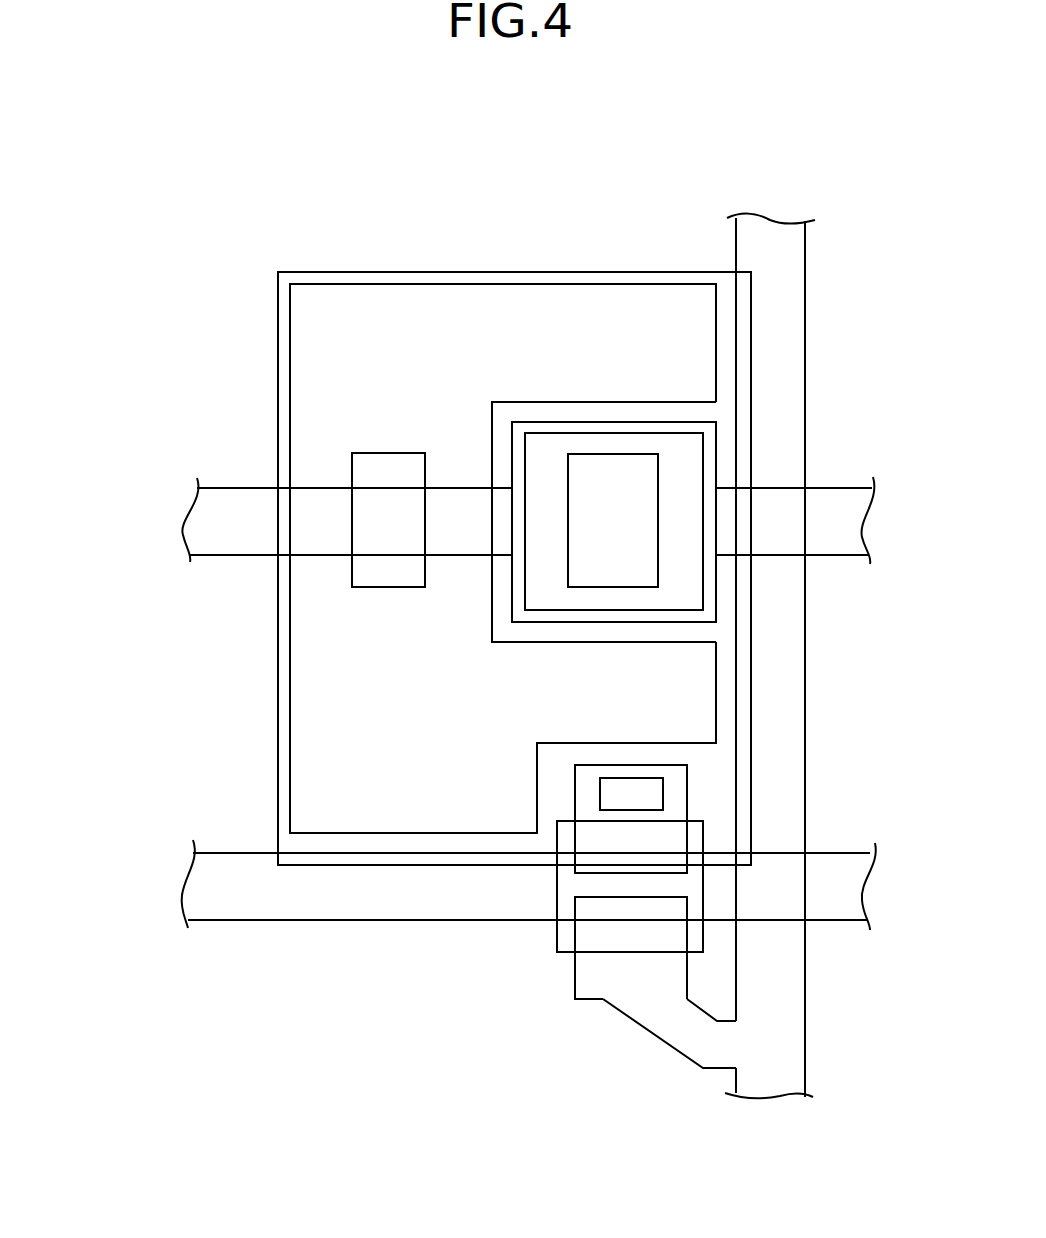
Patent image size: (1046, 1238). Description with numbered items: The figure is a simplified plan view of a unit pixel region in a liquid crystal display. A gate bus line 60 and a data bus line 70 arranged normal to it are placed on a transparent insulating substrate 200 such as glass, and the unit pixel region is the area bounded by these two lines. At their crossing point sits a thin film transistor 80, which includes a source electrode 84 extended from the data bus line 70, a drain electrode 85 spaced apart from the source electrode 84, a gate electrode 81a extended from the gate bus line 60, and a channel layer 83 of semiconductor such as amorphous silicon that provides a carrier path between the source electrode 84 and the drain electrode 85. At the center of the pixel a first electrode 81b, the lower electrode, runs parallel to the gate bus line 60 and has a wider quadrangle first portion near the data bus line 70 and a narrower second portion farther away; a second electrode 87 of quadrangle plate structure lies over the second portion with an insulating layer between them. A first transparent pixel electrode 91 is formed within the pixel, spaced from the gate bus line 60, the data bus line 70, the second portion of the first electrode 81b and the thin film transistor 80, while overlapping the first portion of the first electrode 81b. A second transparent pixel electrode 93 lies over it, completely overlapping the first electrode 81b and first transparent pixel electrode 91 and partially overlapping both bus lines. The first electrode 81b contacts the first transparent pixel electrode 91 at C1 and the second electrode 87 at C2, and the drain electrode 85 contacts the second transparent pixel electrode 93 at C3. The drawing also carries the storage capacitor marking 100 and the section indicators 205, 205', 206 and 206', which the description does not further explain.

The transparent insulating substrate 200 is at (552, 236).
The gate bus line 60 is at (358, 910).
The data bus line 70 is at (788, 787).
The thin film transistor 80 is at (548, 967).
The gate electrode 81a is at (620, 885).
The first electrode 81b is at (555, 615).
The channel layer 83 is at (697, 940).
The source electrode 84 is at (598, 943).
The drain electrode 85 is at (680, 797).
The second electrode 87 is at (690, 455).
The first transparent pixel electrode 91 is at (302, 670).
The second transparent pixel electrode 93 is at (281, 767).
The storage capacitor 100 is at (712, 630).
The contact C1 is at (388, 520).
The contact C2 is at (613, 520).
The contact C3 is at (632, 788).
The section line 205 is at (89, 568).
The section line 205' is at (760, 564).
The section line 206 is at (669, 1123).
The section line 206' is at (673, 370).